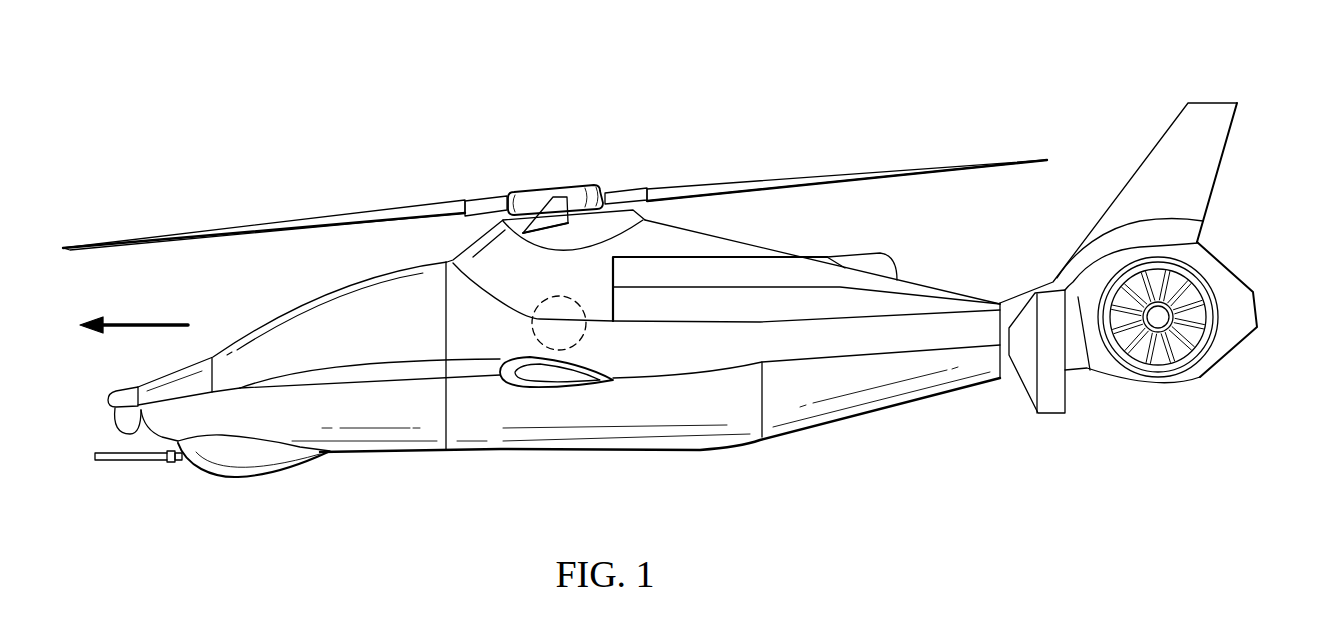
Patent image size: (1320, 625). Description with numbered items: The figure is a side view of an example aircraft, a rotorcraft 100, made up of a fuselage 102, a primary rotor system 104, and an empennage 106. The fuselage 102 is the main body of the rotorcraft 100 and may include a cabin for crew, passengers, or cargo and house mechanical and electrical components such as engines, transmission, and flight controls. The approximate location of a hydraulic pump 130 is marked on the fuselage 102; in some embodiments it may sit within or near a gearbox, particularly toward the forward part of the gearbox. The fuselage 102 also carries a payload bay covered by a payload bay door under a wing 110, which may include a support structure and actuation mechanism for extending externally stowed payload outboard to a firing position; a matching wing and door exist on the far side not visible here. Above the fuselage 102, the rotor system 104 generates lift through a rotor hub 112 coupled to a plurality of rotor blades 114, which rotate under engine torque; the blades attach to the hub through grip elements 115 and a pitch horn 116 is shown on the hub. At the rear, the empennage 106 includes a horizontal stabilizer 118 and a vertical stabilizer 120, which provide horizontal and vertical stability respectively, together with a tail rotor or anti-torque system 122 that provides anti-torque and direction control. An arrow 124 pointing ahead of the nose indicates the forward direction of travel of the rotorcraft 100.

The rotorcraft 100 is at (686, 295).
The fuselage 102 is at (742, 347).
The primary rotor system 104 is at (555, 147).
The empennage 106 is at (1154, 287).
The wing 110 is at (585, 362).
The rotor hub 112 is at (572, 180).
The rotor blades 114 is at (246, 222).
The blade grip 115 is at (488, 200).
The pitch horn 116 is at (547, 187).
The horizontal stabilizer 118 is at (1052, 418).
The vertical stabilizer 120 is at (1235, 125).
The tail rotor or anti-torque system 122 is at (1180, 382).
The arrow 124 is at (147, 321).
The hydraulic pump 130 is at (535, 322).